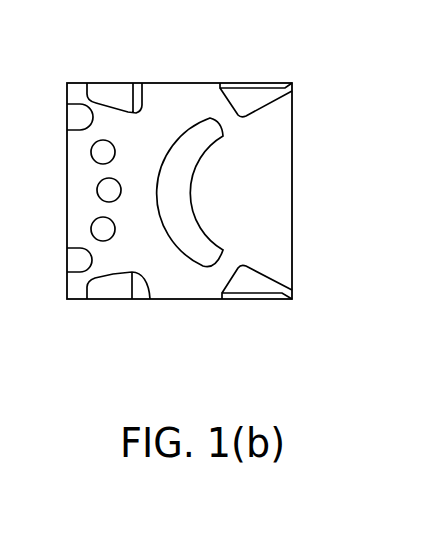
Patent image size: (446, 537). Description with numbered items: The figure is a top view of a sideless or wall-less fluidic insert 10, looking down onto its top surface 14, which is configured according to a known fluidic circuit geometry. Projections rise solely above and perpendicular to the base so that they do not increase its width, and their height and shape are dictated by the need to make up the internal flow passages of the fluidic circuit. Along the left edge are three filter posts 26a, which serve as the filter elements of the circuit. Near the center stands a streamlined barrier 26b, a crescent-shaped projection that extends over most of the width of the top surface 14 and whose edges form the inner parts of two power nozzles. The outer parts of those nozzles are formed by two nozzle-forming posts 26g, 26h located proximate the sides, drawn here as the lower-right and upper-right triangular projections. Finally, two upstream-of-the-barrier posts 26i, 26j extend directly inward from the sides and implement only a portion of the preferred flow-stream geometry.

The fluidic insert 10 is at (74, 57).
The top surface 14 is at (187, 93).
The filter posts 26a is at (103, 230).
The streamlined barrier 26b is at (185, 285).
The nozzle-forming post 26g is at (243, 282).
The nozzle-forming post 26h is at (258, 98).
The upstream-of-the-barrier post 26i is at (115, 289).
The upstream-of-the-barrier post 26j is at (115, 90).